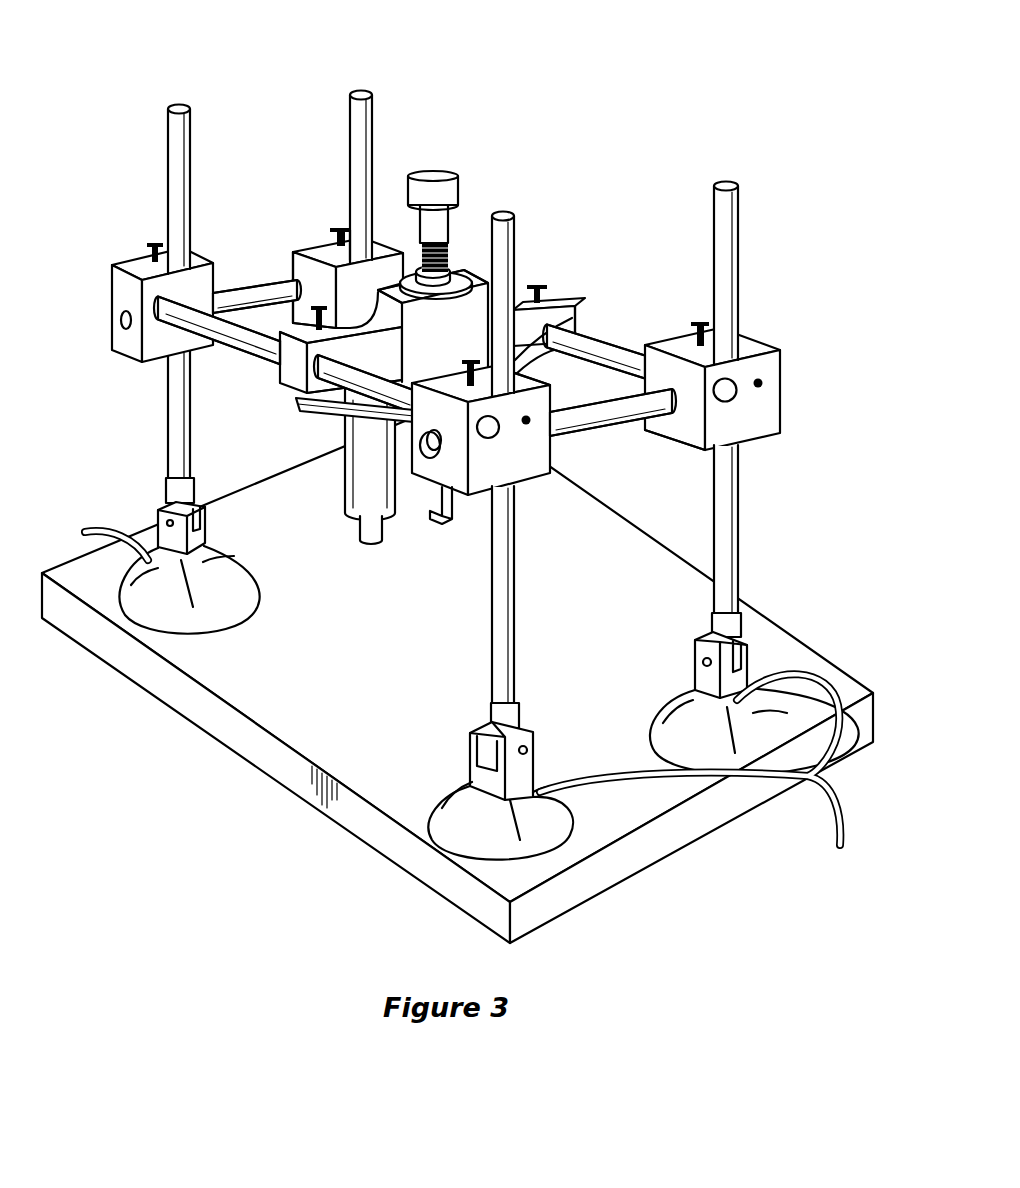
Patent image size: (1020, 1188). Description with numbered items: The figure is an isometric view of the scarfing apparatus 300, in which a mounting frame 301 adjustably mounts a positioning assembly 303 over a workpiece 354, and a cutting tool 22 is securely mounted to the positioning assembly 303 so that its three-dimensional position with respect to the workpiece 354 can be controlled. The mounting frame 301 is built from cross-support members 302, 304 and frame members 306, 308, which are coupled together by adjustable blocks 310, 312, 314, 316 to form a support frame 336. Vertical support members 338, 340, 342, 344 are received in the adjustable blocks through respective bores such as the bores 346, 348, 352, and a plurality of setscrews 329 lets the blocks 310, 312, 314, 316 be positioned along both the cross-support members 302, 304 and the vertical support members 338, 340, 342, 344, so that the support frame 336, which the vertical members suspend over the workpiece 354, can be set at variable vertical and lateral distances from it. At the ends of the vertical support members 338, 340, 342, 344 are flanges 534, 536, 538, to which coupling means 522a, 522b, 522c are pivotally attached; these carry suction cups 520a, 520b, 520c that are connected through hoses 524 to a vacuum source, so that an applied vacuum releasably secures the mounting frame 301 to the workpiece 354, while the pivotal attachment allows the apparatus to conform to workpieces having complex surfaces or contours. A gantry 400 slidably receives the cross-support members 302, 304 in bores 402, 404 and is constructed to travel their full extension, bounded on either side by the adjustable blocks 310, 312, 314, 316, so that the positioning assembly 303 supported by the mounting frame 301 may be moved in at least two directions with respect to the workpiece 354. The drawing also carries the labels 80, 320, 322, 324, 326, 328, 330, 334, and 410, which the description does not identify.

The cutting tool 22 is at (375, 543).
The bracket 80 is at (460, 541).
The scarfing apparatus 300 is at (588, 183).
The mounting frame 301 is at (104, 200).
The cross-support member 302 is at (237, 328).
The positioning assembly 303 is at (348, 512).
The cross-support member 304 is at (611, 343).
The frame member 306 is at (233, 292).
The frame member 308 is at (623, 427).
The adjustable block 310 is at (197, 263).
The adjustable block 312 is at (527, 475).
The adjustable block 314 is at (741, 333).
The adjustable block 316 is at (302, 272).
The clamp block 320 is at (154, 296).
The bore 322 is at (122, 343).
The bore 324 is at (489, 441).
The bore 326 is at (433, 431).
The clamp block bottom 328 is at (676, 438).
The setscrews 329 is at (528, 424).
The bore 330 is at (737, 403).
The clamp block 334 is at (360, 289).
The support frame 336 is at (300, 274).
The vertical support member 338 is at (182, 432).
The vertical support member 340 is at (517, 604).
The vertical support member 342 is at (736, 523).
The vertical support member 344 is at (370, 113).
The bore 346 is at (166, 238).
The bore 348 is at (520, 375).
The bore 352 is at (357, 238).
The workpiece 354 is at (333, 698).
The gantry 400 is at (561, 307).
The bore 402 is at (295, 407).
The bore 404 is at (574, 308).
The bolt 410 is at (466, 258).
The suction cup 520a is at (183, 618).
The suction cup 520b is at (543, 838).
The suction cup 520c is at (836, 690).
The coupling means 522a is at (203, 512).
The coupling means 522b is at (543, 730).
The coupling means 522c is at (748, 653).
The hoses 524 is at (131, 527).
The flange 534 is at (520, 700).
The flange 536 is at (717, 612).
The flange 538 is at (177, 485).